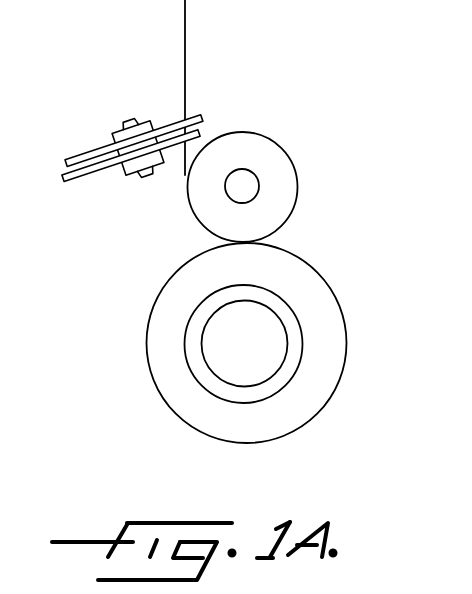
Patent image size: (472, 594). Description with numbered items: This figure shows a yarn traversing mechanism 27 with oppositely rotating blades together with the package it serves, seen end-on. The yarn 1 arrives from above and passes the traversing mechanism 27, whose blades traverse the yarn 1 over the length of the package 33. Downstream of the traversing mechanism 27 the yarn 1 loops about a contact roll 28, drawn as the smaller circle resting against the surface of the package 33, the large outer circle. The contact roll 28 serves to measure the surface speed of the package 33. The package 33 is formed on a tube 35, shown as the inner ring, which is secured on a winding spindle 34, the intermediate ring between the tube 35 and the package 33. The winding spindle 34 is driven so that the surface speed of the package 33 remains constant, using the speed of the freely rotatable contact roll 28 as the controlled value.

The yarn 1 is at (185, 36).
The yarn traversing mechanism 27 is at (78, 156).
The contact roll 28 is at (335, 148).
The package 33 is at (132, 406).
The winding spindle 34 is at (175, 438).
The tube 35 is at (320, 437).